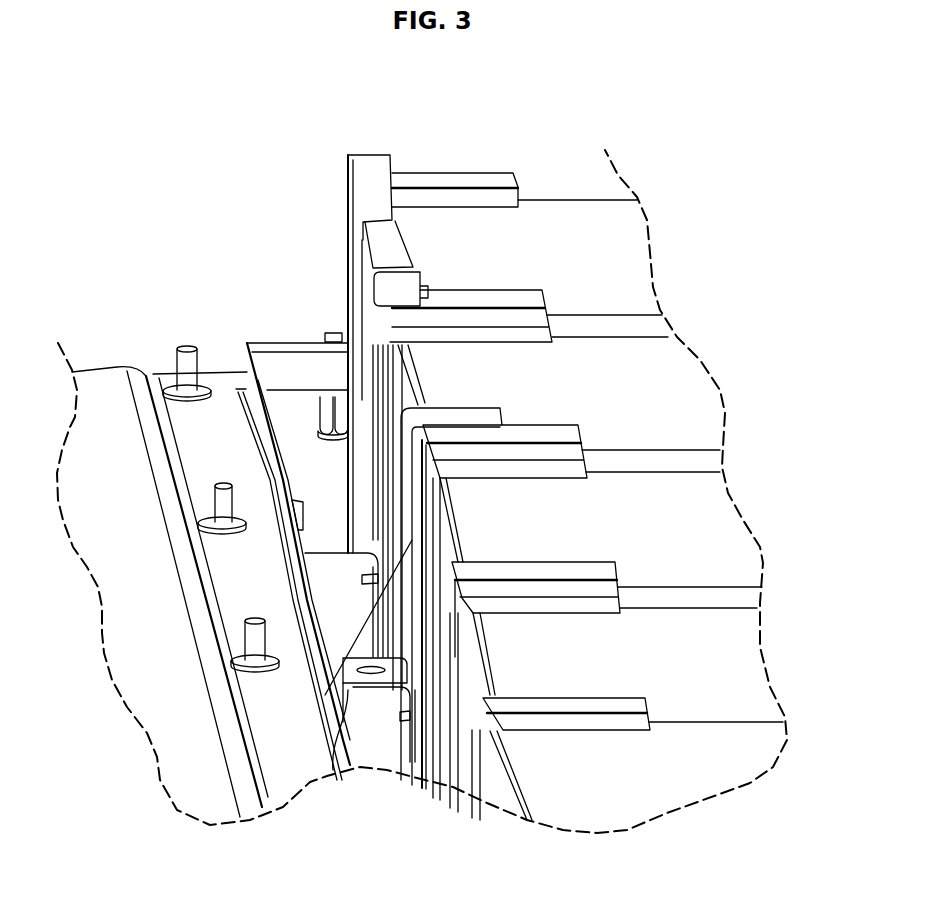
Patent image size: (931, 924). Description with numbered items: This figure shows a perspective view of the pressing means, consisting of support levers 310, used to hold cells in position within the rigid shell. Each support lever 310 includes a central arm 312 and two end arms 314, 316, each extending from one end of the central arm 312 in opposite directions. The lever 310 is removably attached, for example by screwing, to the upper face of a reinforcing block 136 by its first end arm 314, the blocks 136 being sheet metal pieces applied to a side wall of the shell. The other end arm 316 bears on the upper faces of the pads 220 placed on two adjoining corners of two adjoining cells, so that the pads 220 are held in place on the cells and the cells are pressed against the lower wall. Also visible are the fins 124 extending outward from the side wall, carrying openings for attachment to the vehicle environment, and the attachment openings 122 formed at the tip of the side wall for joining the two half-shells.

The attachment opening 122 is at (187, 346).
The fin 124 is at (106, 398).
The block 136 is at (383, 753).
The pad 220 is at (495, 298).
The support lever 310 is at (366, 697).
The central arm 312 is at (325, 695).
The first end arm 314 is at (383, 690).
The end arm 316 is at (460, 415).